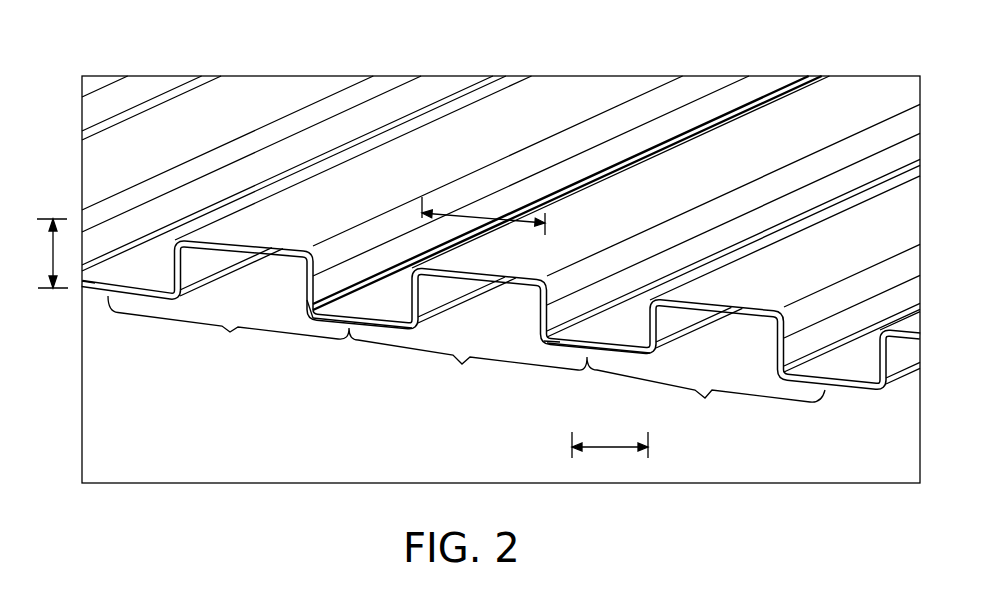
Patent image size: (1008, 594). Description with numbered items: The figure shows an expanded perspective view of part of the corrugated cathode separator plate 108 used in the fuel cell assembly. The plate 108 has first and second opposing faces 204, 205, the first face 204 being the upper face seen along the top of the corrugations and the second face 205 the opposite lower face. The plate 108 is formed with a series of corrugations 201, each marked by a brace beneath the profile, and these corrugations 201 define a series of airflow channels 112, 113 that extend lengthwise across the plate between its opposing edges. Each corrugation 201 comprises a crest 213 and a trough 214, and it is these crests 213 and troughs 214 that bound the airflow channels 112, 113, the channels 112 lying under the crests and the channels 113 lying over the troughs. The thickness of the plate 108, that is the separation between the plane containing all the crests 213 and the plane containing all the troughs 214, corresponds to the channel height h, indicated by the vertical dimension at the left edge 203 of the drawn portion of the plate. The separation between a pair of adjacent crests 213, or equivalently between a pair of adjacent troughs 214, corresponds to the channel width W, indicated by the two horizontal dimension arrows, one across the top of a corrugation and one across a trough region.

The corrugated cathode separator plate 108 is at (496, 242).
The airflow channel 112 is at (276, 307).
The airflow channel 113 is at (404, 312).
The corrugation 201 is at (230, 332).
The panel edge 203 is at (88, 291).
The first face 204 is at (600, 239).
The second face 205 is at (587, 358).
The crest 213 is at (297, 249).
The trough 214 is at (328, 318).
The channel height h is at (52, 255).
The channel width W is at (490, 218).